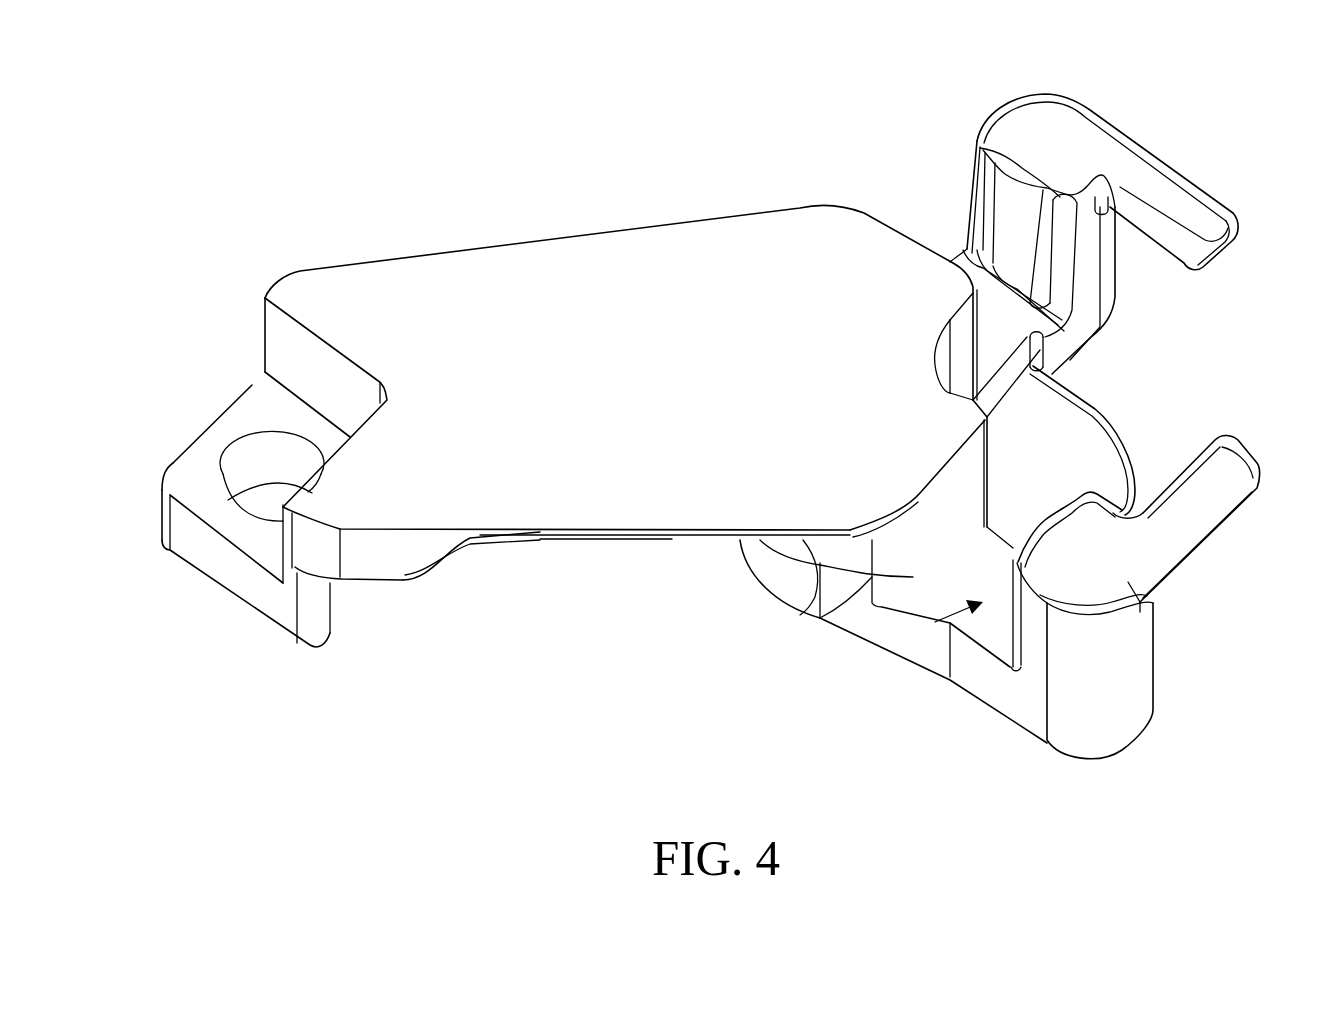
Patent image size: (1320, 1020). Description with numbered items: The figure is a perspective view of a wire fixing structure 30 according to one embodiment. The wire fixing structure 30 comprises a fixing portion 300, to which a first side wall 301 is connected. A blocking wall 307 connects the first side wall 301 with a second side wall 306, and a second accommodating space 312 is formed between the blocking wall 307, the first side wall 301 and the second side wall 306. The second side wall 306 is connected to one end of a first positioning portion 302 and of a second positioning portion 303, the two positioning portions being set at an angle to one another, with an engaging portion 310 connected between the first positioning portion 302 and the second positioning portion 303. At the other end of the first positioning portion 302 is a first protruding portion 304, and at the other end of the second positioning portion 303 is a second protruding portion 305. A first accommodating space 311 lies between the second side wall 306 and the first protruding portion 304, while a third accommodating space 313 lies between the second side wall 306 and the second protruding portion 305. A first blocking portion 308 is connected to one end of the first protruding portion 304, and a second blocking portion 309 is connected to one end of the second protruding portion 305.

The wire fixing structure 30 is at (283, 145).
The fixing portion 300 is at (193, 472).
The first side wall 301 is at (283, 340).
The first positioning portion 302 is at (983, 675).
The second positioning portion 303 is at (1073, 333).
The first protruding portion 304 is at (1117, 662).
The second protruding portion 305 is at (977, 190).
The second side wall 306 is at (803, 613).
The blocking wall 307 is at (490, 270).
The first blocking portion 308 is at (1217, 466).
The second blocking portion 309 is at (1170, 187).
The engaging portion 310 is at (1070, 447).
The first accommodating space 311 is at (890, 638).
The second accommodating space 312 is at (518, 553).
The third accommodating space 313 is at (944, 216).